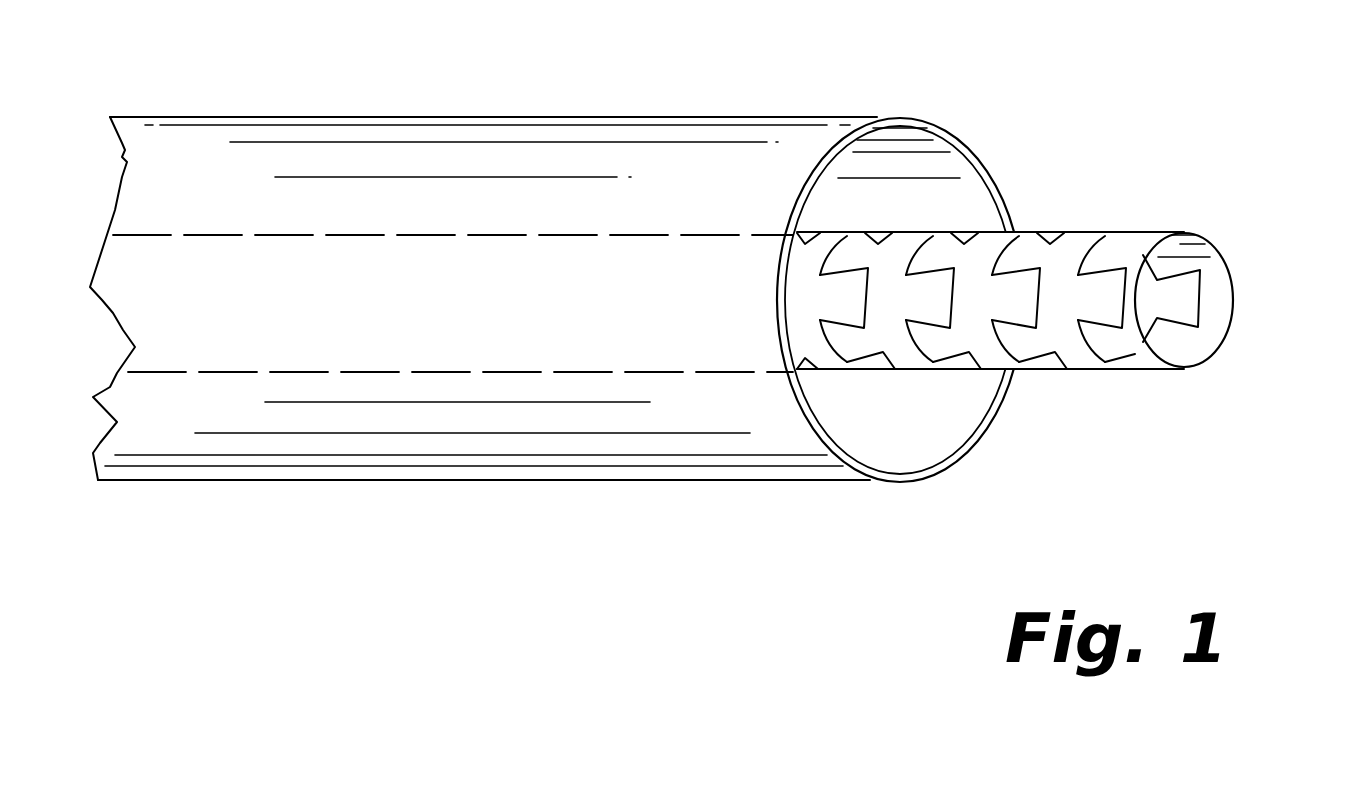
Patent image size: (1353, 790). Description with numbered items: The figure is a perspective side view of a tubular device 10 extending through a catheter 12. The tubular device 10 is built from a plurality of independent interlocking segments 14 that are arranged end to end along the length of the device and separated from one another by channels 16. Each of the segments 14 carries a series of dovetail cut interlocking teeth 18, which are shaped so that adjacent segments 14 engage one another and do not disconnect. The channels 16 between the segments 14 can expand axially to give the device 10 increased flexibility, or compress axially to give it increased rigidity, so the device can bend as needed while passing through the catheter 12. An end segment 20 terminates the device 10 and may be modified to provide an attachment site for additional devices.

The tubular device 10 is at (1118, 161).
The catheter 12 is at (713, 110).
The independent interlocking segments 14 is at (822, 350).
The channels 16 is at (980, 230).
The dovetail cut interlocking teeth 18 is at (1010, 298).
The end segment 20 is at (1247, 277).